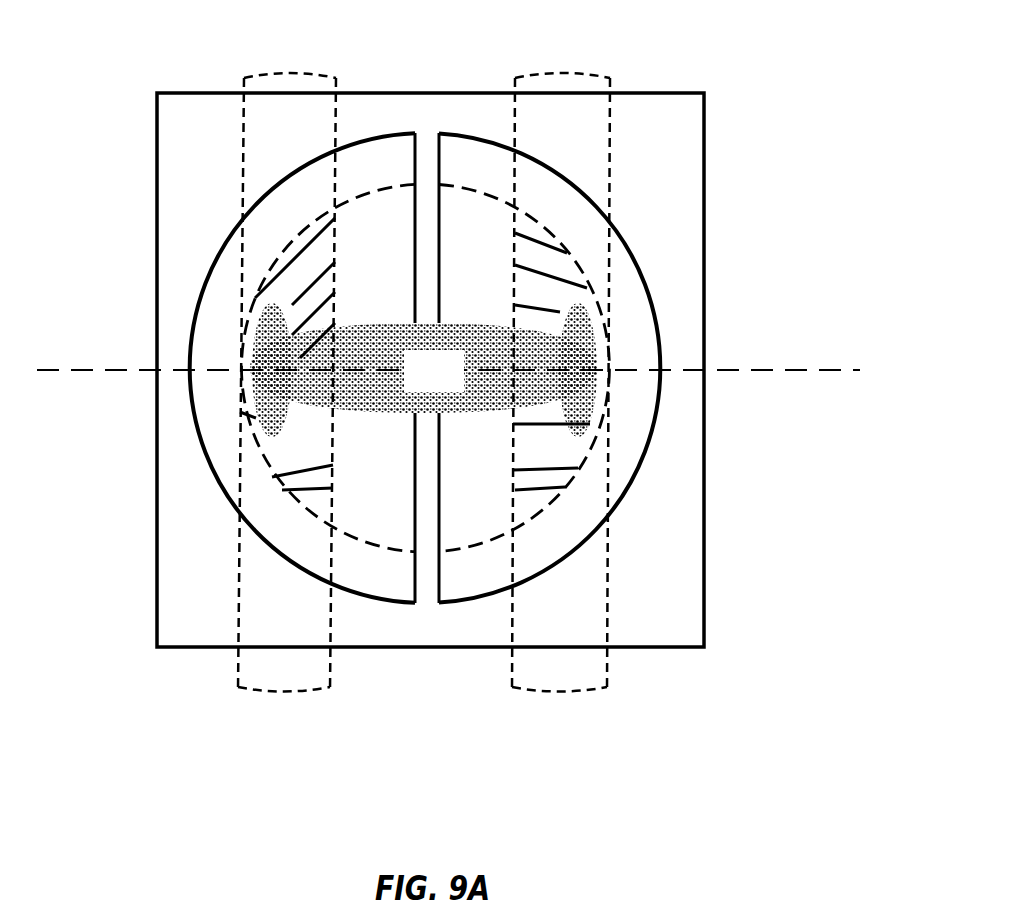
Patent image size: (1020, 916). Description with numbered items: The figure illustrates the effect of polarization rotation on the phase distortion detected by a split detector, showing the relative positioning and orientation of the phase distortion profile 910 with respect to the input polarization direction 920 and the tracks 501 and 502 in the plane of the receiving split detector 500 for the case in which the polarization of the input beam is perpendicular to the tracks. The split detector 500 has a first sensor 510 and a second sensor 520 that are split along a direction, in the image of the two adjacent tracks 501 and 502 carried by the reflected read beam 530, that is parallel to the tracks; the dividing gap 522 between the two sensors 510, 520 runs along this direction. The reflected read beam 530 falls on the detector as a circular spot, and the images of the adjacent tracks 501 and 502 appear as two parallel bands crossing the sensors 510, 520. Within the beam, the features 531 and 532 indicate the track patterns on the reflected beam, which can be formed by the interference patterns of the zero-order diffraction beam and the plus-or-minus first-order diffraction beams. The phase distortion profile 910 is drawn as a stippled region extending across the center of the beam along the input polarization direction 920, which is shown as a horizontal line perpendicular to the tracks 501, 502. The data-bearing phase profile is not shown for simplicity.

The split detector 500 is at (155, 153).
The first sensor 510 is at (220, 285).
The second sensor 520 is at (628, 292).
The slot between halves 522 is at (429, 138).
The reflected read beam 530 is at (390, 553).
The track 501 is at (277, 80).
The track 502 is at (553, 80).
The feature 531 is at (333, 413).
The feature 532 is at (550, 495).
The phase distortion profile 910 is at (462, 387).
The input polarization direction 920 is at (807, 367).